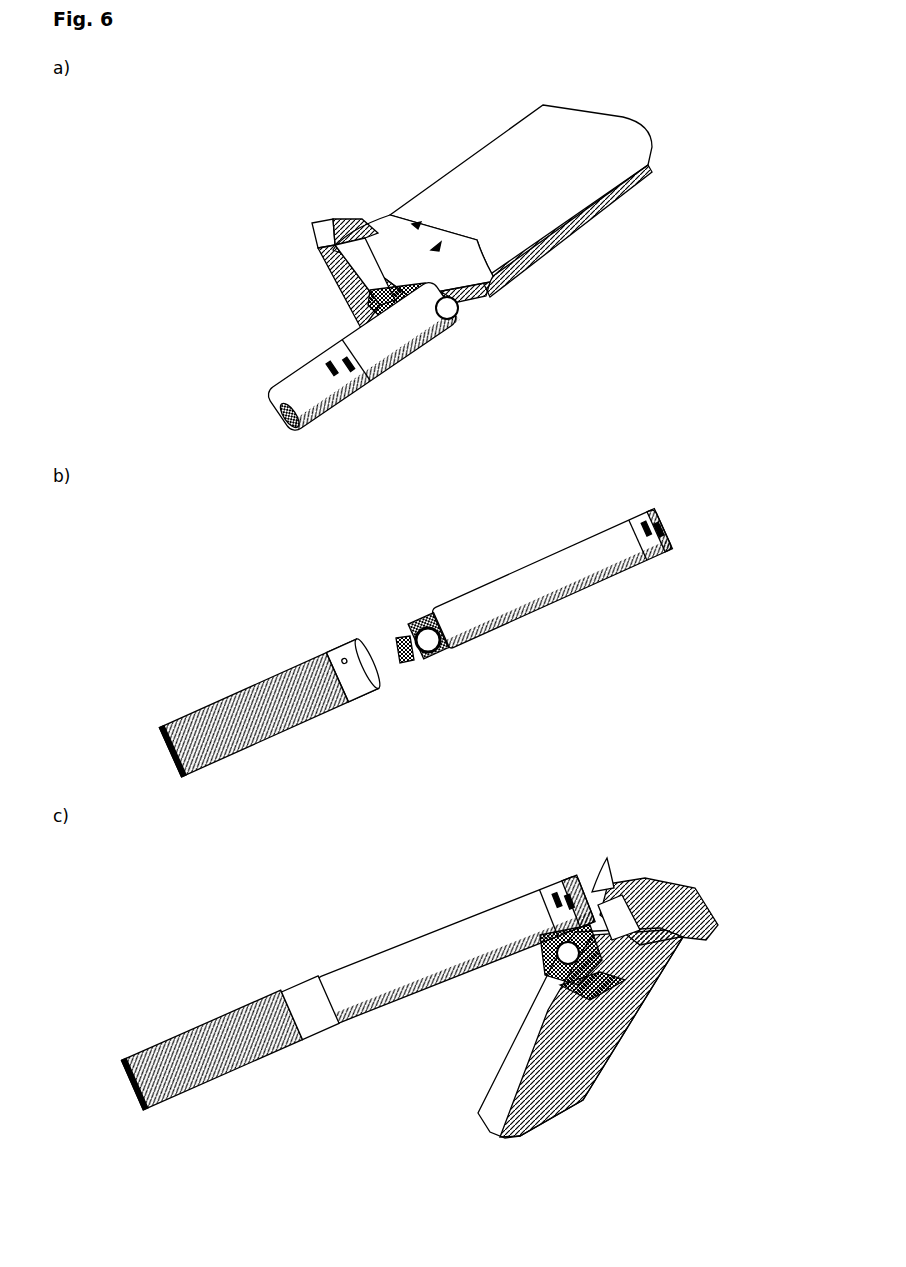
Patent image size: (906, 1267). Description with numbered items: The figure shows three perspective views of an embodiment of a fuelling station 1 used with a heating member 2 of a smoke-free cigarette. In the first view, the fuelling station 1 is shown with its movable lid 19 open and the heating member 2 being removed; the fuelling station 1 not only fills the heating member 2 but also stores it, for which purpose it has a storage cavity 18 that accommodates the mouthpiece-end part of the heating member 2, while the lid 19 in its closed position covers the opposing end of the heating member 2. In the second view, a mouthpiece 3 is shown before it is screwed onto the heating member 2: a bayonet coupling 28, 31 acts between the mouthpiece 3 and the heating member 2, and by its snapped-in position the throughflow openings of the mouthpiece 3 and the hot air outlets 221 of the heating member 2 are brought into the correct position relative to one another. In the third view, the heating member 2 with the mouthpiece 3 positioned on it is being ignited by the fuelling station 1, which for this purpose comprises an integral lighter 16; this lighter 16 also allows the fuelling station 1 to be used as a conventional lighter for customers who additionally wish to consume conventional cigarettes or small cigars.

The fuelling station 1 is at (494, 185).
The heating member 2 is at (389, 337).
The mouthpiece 3 is at (268, 699).
The integral lighter 16 is at (568, 953).
The storage cavity 18 is at (447, 308).
The movable lid 19 is at (327, 248).
The bayonet coupling 28 is at (428, 640).
The bayonet coupling 31 is at (363, 667).
The hot air outlets 221 is at (402, 650).